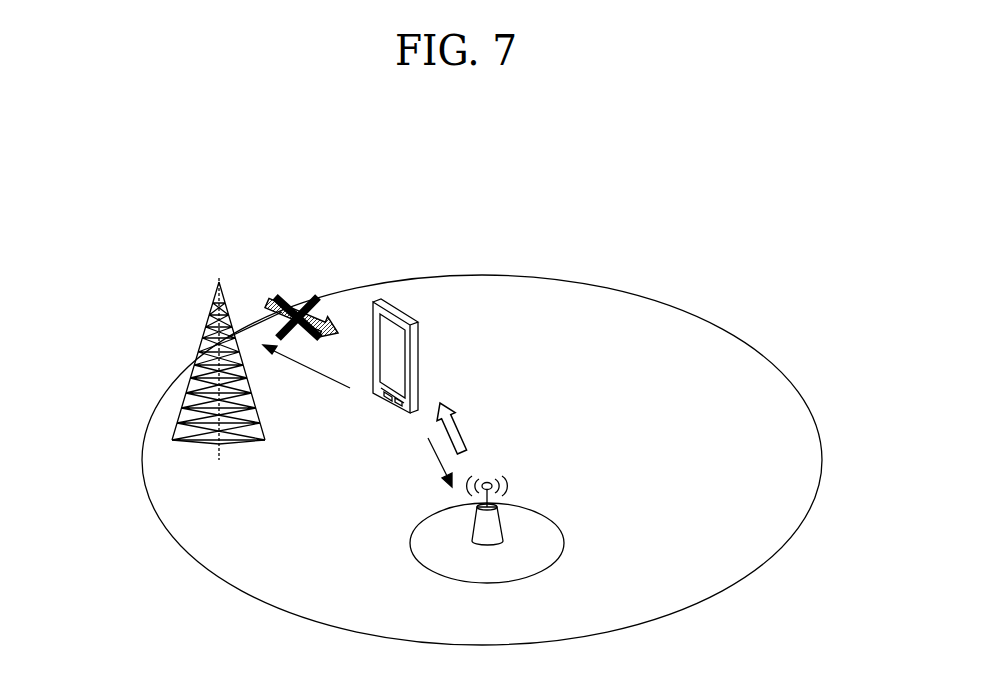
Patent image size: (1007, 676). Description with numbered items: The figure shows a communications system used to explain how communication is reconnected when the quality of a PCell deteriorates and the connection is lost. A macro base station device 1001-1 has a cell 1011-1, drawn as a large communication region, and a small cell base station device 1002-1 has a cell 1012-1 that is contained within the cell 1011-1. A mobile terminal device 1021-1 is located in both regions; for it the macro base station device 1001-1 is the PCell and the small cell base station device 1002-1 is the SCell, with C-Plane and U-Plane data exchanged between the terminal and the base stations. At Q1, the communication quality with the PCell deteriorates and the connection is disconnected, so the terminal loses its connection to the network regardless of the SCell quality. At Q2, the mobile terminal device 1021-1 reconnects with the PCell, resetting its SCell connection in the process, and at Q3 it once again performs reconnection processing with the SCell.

The macro base station device 1001-1 is at (212, 338).
The cell (communication region) of the macro base station device 1011-1 is at (146, 492).
The mobile terminal device 1021-1 is at (418, 372).
The small cell base station device 1002-1 is at (497, 513).
The cell (communication region) of the small cell base station device 1012-1 is at (553, 563).
The disconnection of the communication connection with the PCell Q1 is at (318, 299).
The reconnection with the PCell Q2 is at (318, 376).
The reconnection processing with the SCell Q3 is at (433, 447).